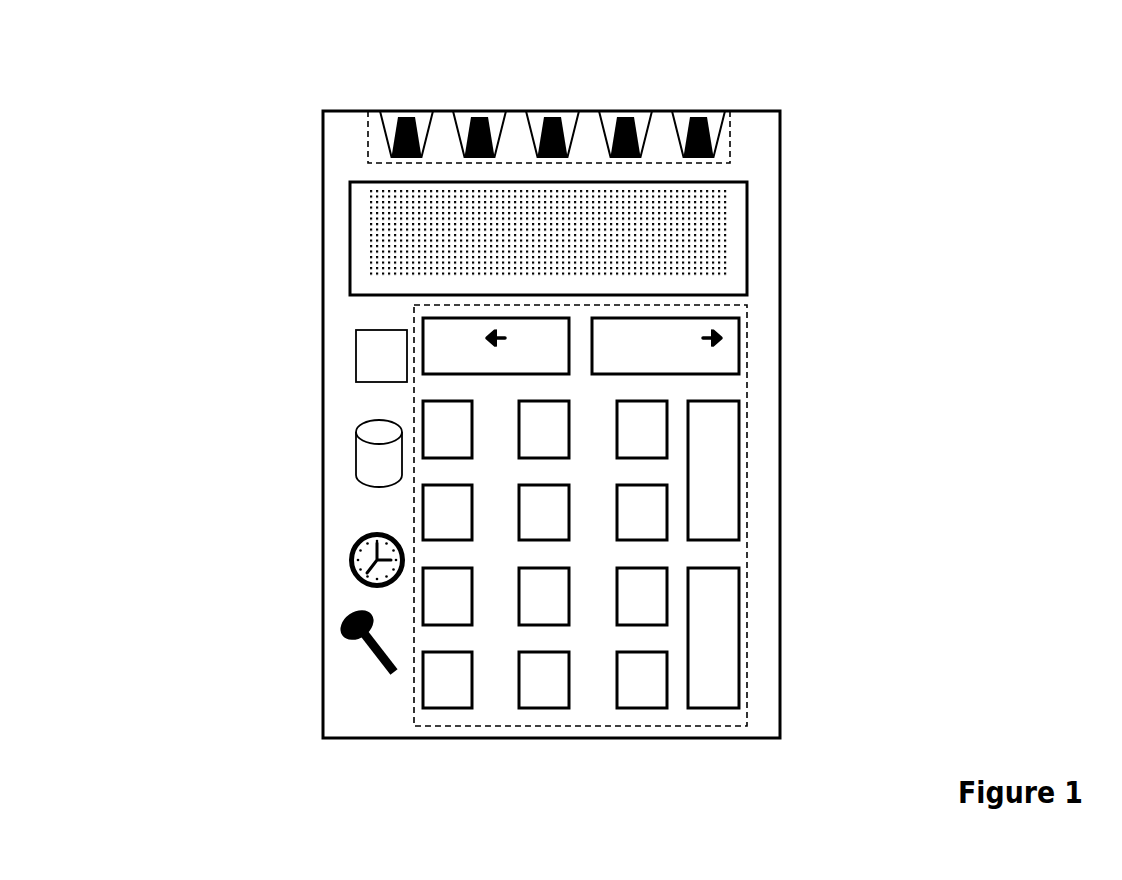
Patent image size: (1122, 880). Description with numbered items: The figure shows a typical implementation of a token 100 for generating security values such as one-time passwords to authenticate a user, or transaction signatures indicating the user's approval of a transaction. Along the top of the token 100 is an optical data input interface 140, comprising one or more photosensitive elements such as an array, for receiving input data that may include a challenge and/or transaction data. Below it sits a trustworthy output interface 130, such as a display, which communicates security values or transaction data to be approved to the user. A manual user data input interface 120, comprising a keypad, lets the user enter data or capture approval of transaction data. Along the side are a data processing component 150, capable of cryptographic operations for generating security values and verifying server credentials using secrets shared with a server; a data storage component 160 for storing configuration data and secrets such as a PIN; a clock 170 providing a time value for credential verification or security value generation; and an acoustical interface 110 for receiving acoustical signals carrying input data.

The token 100 is at (323, 718).
The acoustical interface 110 is at (368, 662).
The manual user data input interface 120 is at (748, 648).
The trustworthy output interface 130 is at (748, 247).
The optical data input interface 140 is at (730, 128).
The data processing component 150 is at (356, 347).
The data storage component 160 is at (356, 451).
The clock 170 is at (350, 560).